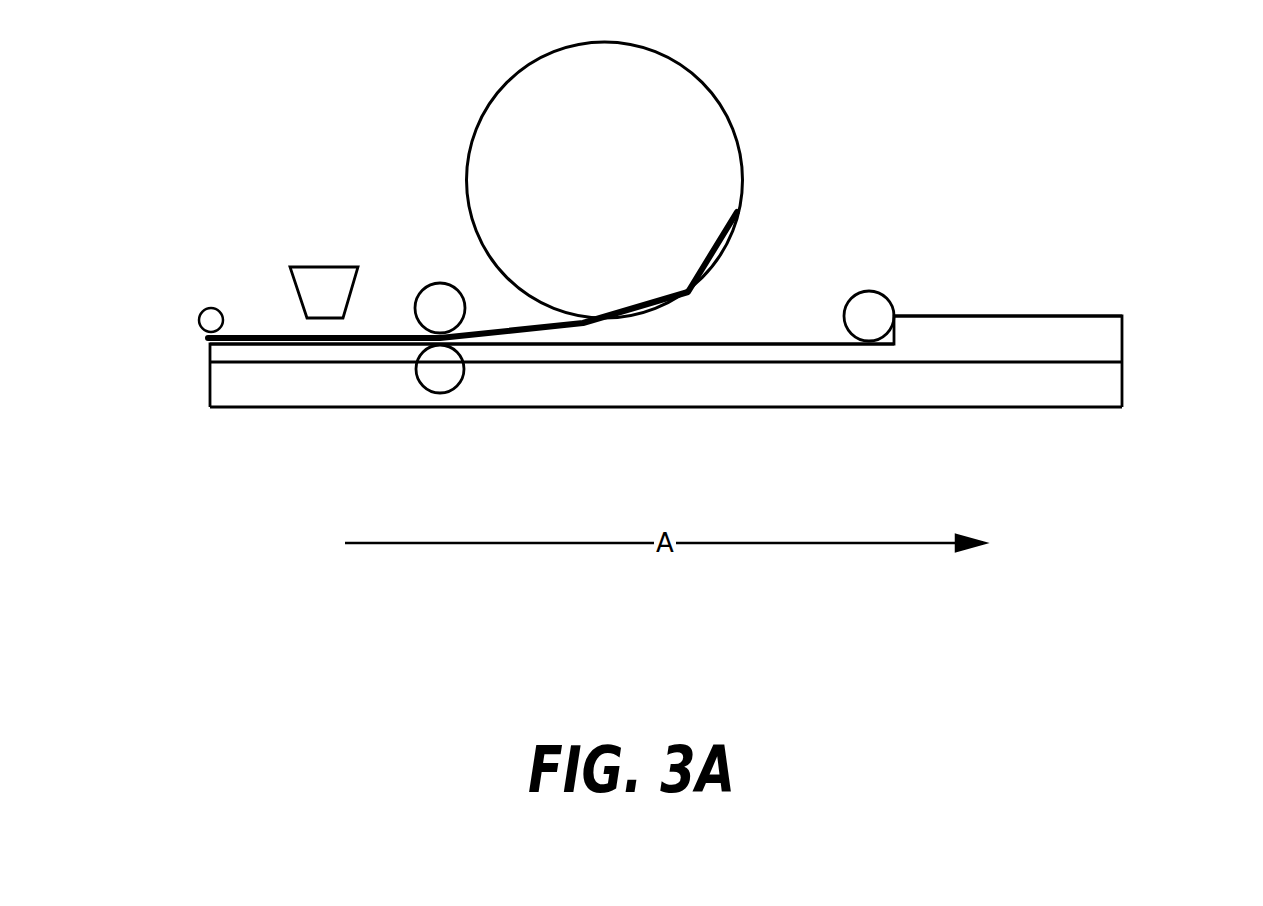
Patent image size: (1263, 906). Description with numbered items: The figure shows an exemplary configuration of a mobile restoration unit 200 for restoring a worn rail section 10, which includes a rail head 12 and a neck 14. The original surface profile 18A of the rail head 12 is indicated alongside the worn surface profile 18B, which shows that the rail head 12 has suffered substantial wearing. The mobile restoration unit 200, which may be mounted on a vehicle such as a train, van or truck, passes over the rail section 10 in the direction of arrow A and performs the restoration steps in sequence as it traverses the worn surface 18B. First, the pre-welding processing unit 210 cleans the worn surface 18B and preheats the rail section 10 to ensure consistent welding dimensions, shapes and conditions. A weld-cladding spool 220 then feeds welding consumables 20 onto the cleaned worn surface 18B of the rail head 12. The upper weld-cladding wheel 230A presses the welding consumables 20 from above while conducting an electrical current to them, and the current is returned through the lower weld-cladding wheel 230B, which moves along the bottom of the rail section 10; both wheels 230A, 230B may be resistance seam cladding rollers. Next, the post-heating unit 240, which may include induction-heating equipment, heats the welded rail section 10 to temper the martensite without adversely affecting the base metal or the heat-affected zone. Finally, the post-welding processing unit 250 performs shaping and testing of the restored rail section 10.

The mobile restoration unit 200 is at (303, 73).
The weld-cladding spool 220 is at (713, 93).
The welding consumables 20 is at (719, 228).
The upper weld-cladding wheel 230A is at (440, 284).
The lower weld-cladding wheel 230B is at (440, 393).
The post-heating unit 240 is at (325, 267).
The post-welding processing unit 250 is at (208, 310).
The pre-welding processing unit 210 is at (887, 298).
The worn surface profile 18B is at (746, 343).
The original surface profile 18A is at (1043, 316).
The rail head 12 is at (1110, 339).
The neck 14 is at (1110, 385).
The rail section 10 is at (210, 384).